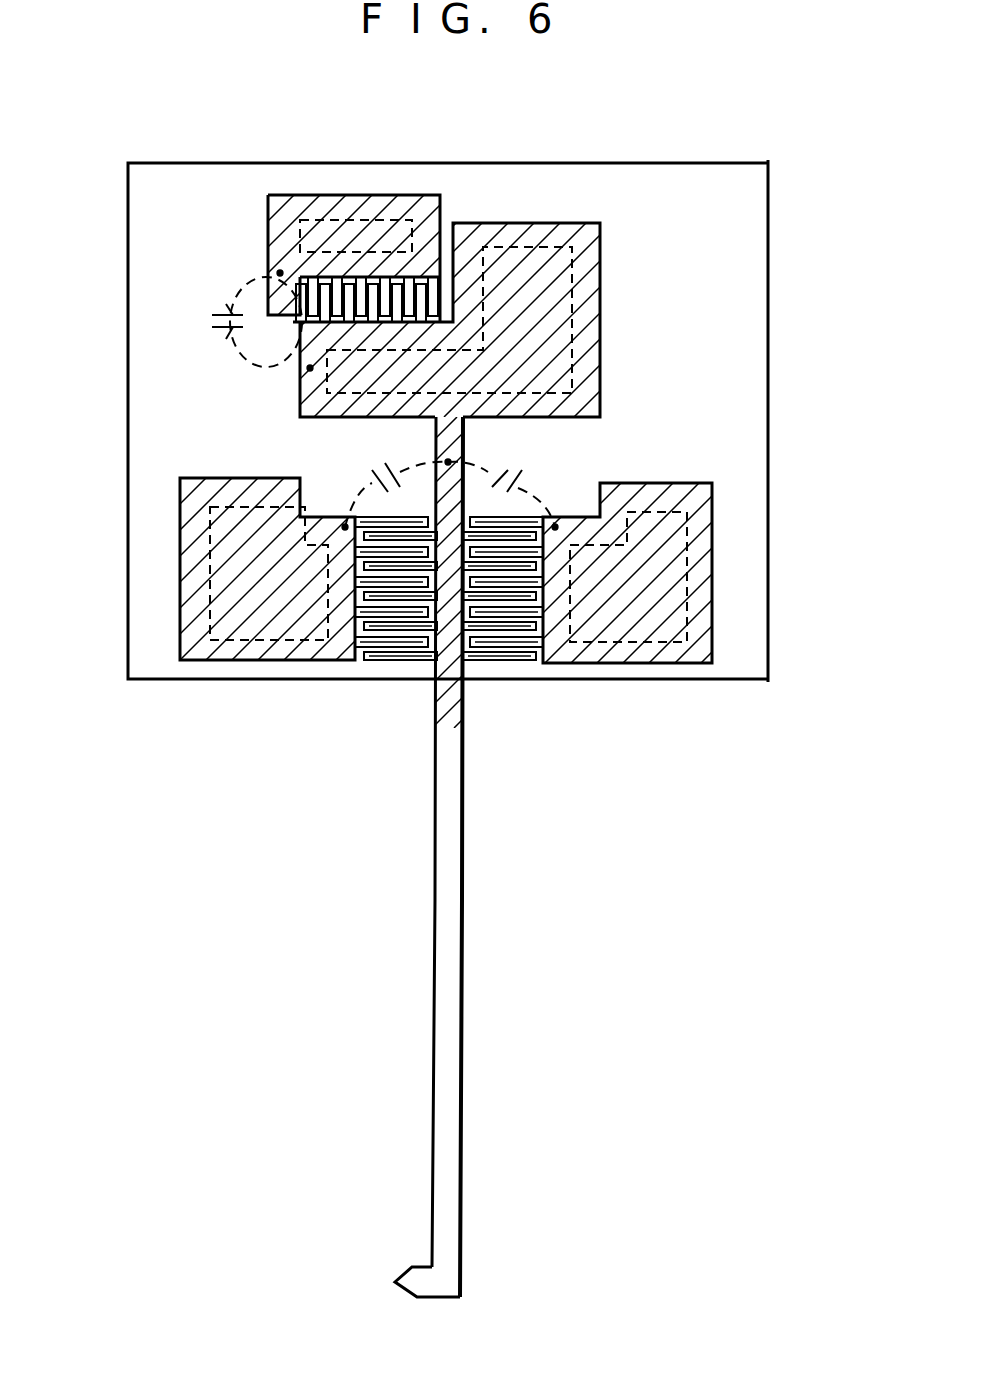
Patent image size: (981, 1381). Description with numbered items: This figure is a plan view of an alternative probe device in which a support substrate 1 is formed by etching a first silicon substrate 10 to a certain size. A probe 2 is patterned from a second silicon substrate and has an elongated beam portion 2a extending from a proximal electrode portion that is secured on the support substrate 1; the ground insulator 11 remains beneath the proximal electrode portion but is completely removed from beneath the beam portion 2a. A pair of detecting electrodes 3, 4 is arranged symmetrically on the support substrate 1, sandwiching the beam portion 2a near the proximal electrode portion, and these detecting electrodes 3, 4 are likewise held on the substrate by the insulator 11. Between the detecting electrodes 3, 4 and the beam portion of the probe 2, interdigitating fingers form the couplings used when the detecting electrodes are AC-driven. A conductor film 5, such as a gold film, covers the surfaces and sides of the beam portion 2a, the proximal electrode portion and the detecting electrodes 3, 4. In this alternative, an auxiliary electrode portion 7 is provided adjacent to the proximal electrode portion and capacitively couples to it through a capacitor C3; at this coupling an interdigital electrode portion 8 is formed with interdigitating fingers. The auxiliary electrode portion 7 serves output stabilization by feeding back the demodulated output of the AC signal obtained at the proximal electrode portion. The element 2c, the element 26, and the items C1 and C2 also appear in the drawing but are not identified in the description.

The support substrate 1 is at (145, 403).
The probe 2 is at (425, 835).
The elongated beam portion 2a is at (450, 892).
The lead tip 2c is at (428, 1300).
The detecting electrode 3 is at (225, 652).
The detecting electrode 4 is at (657, 655).
The conductor film 5 is at (281, 200).
The auxiliary electrode portion 7 is at (338, 200).
The interdigital electrode portion 8 is at (298, 320).
The first silicon substrate 10 is at (765, 293).
The insulator 11 is at (412, 215).
The electrode 26 is at (585, 330).
The capacitor C1 is at (396, 547).
The capacitor C2 is at (503, 549).
The capacitor C3 is at (238, 320).